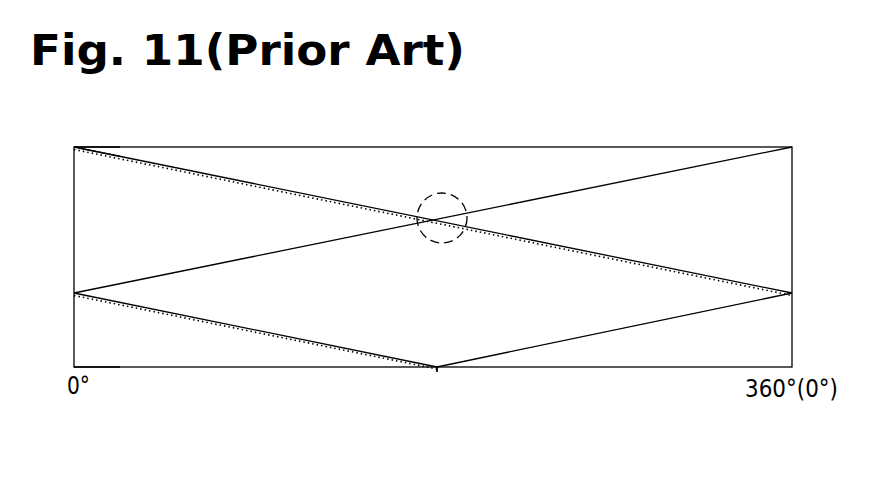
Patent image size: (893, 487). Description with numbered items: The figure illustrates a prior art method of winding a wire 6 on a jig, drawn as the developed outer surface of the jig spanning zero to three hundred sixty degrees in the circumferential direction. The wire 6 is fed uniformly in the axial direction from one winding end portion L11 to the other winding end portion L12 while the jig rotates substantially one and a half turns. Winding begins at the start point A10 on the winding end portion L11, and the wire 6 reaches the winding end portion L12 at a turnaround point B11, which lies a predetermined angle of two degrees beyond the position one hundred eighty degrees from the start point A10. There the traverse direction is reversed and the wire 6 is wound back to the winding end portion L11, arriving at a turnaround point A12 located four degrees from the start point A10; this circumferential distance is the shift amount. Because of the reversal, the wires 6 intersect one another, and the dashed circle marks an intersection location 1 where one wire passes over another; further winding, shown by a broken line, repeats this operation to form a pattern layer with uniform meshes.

The crossing point of the tooth traces 1 is at (455, 193).
The wire 6 is at (657, 177).
The start point A10 is at (73, 145).
The turnaround point A12 is at (107, 130).
The winding end portion L11 is at (71, 148).
The winding end portion L12 is at (70, 365).
The turnaround point B11 is at (435, 384).